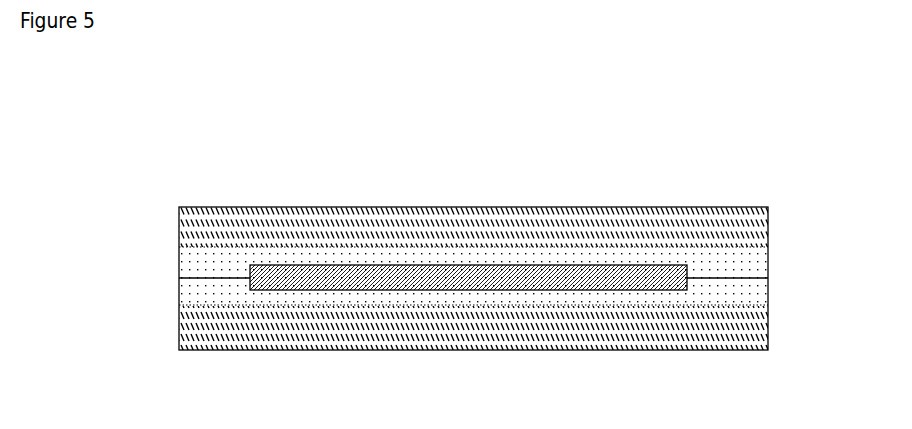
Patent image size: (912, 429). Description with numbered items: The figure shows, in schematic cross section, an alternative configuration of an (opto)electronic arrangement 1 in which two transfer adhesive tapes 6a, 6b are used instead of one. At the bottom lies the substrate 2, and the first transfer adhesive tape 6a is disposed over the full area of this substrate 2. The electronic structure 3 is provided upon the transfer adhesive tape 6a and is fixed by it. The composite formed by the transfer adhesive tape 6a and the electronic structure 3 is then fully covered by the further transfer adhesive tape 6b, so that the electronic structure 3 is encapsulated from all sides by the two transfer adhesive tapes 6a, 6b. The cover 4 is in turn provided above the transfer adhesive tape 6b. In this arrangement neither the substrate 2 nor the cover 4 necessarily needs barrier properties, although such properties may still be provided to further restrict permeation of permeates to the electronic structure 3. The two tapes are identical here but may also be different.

The (opto)electronic arrangement 1 is at (380, 181).
The substrate 2 is at (718, 329).
The electronic structure 3 is at (555, 290).
The cover 4 is at (718, 228).
The first transfer adhesive tape 6a is at (200, 297).
The further transfer adhesive tape 6b is at (200, 263).